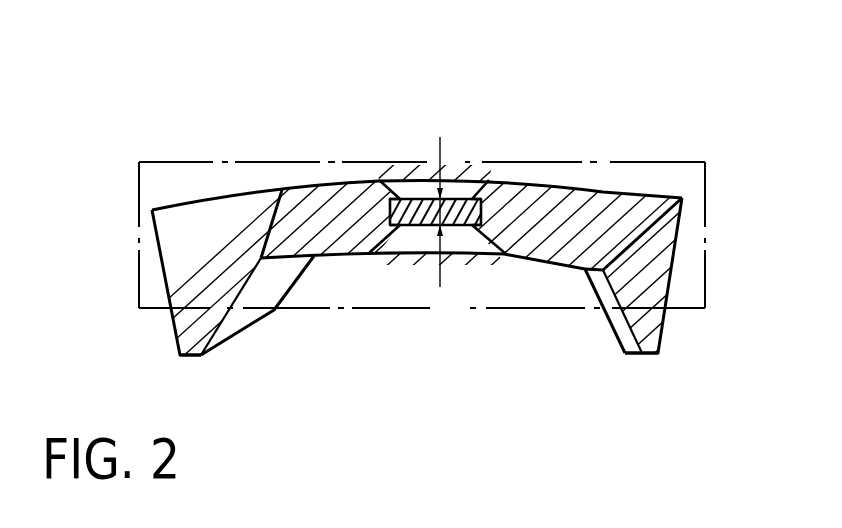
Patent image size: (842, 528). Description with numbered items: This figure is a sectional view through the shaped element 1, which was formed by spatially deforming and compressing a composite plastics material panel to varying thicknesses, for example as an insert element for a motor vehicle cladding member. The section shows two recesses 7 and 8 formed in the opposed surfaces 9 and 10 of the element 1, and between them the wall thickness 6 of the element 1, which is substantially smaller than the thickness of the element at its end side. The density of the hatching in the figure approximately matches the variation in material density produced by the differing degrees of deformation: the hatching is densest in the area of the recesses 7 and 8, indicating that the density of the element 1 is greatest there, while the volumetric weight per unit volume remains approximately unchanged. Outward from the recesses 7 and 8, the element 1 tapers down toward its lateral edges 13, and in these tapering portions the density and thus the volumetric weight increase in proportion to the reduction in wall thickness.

The shaped element 1 is at (617, 117).
The wall thickness 6 is at (442, 150).
The recess 7 is at (412, 229).
The recess 8 is at (409, 197).
The surface 9 is at (548, 270).
The surface 10 is at (228, 193).
The lateral edge 13 is at (187, 356).